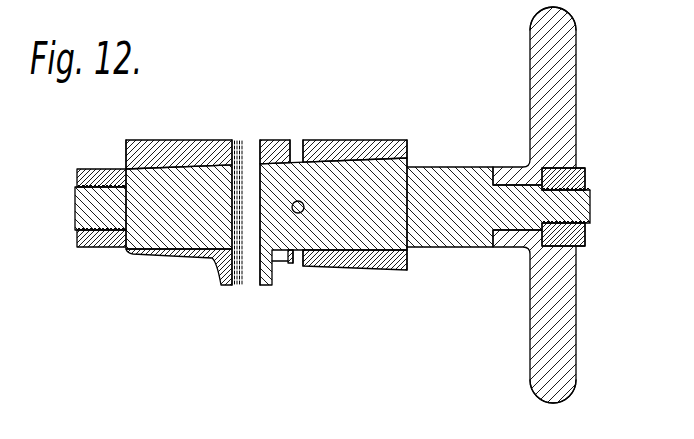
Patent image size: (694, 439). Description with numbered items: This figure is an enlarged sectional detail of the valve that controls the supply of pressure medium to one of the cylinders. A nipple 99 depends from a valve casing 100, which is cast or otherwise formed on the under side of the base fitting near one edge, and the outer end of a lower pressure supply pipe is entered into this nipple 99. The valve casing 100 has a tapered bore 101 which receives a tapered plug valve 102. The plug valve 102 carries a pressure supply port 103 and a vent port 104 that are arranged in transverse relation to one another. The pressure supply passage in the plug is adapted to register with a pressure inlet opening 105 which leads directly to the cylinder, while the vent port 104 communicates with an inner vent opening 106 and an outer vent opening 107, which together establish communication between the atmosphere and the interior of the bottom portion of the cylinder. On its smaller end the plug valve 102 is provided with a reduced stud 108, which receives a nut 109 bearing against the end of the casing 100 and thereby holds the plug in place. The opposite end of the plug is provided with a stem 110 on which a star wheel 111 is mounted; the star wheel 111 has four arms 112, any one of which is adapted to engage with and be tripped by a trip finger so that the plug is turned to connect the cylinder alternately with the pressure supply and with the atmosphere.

The nipple 99 is at (224, 286).
The valve casing 100 is at (378, 271).
The tapered bore 101 is at (190, 166).
The tapered plug valve 102 is at (350, 160).
The pressure supply port 103 is at (252, 183).
The vent port 104 is at (296, 214).
The pressure inlet opening 105 is at (245, 148).
The inner vent opening 106 is at (299, 143).
The outer vent opening 107 is at (300, 268).
The reduced stud 108 is at (82, 213).
The nut 109 is at (107, 248).
The stem 110 is at (457, 171).
The star wheel 111 is at (616, 128).
The arms 112 is at (574, 54).